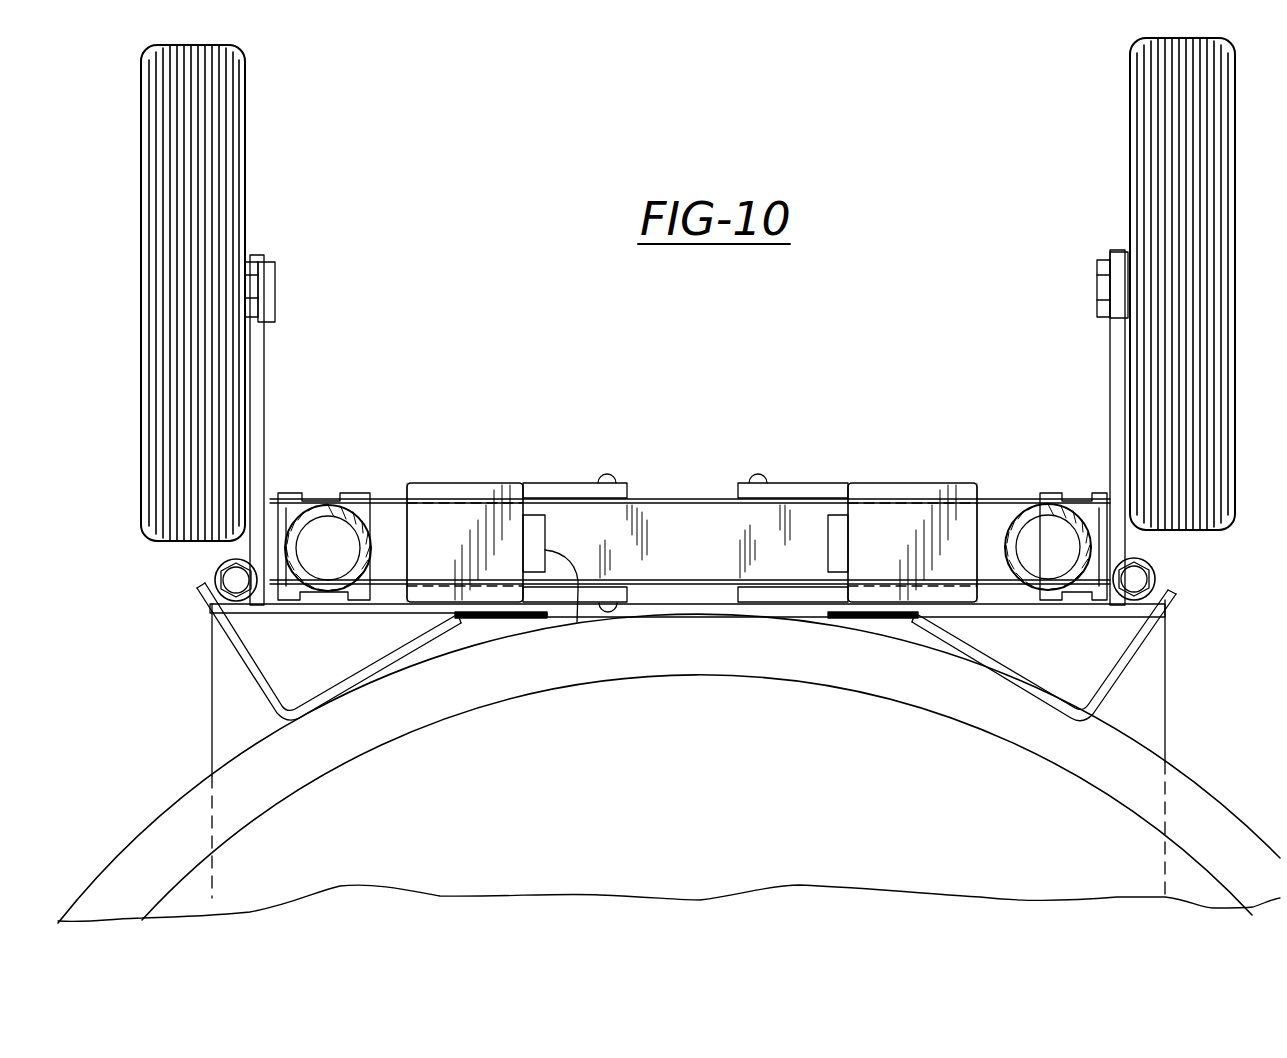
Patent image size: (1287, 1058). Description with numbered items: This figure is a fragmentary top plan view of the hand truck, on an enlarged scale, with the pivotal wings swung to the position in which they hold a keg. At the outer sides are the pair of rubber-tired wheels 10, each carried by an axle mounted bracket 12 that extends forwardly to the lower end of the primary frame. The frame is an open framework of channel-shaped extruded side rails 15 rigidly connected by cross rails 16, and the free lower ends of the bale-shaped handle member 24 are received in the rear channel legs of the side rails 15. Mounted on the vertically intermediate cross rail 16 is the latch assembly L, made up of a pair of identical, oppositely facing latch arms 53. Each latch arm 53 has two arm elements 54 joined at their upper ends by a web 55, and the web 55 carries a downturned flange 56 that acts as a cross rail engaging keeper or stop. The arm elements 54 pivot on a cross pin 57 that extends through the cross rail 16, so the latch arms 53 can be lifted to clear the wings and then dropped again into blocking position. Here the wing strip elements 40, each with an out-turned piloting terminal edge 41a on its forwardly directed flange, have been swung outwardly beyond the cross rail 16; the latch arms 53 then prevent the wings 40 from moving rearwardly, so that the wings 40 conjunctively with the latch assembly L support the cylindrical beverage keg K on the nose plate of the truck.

The wheels 10 is at (245, 148).
The axle mounted brackets 12 is at (255, 385).
The side rails 15 is at (298, 500).
The handle member 24 is at (365, 520).
The cross rails 16 is at (690, 490).
The latch arms 53 is at (450, 479).
The arm elements 54 is at (558, 485).
The web 55 is at (692, 542).
The downturned flange 56 is at (577, 622).
The cross pin 57 is at (605, 482).
The latch assembly L is at (628, 476).
The wing strip element 40 is at (241, 655).
The piloting terminal edge 41a is at (526, 616).
The keg K is at (1232, 810).